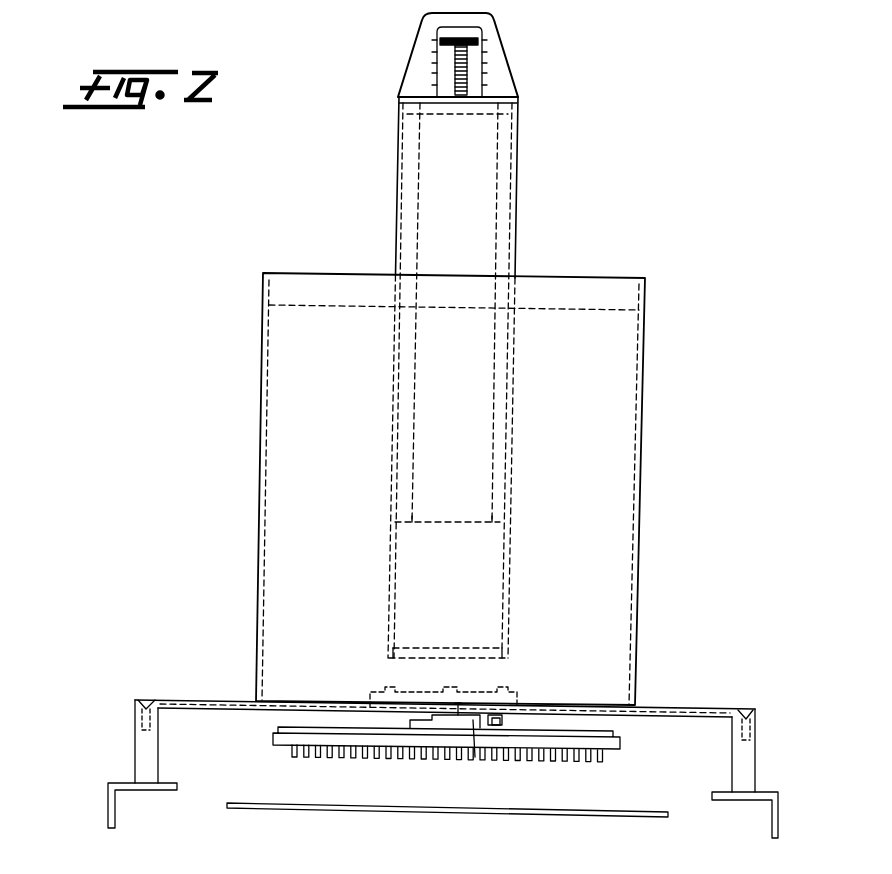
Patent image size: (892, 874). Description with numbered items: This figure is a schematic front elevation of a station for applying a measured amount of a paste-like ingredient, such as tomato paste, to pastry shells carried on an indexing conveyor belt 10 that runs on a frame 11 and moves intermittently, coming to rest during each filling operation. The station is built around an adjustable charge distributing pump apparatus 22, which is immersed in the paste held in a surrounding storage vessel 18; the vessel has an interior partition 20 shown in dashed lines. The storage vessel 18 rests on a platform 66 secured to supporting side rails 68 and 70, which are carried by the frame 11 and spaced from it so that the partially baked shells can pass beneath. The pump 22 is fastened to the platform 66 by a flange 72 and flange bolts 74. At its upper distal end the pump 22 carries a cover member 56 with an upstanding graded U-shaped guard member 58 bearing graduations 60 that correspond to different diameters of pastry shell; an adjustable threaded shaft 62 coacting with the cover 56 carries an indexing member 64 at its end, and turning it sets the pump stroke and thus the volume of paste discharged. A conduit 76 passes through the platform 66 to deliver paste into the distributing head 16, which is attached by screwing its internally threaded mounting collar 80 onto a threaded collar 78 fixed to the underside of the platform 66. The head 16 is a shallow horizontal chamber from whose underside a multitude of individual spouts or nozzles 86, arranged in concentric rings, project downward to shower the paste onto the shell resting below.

The indexing conveyor belt 10 is at (633, 817).
The frame 11 is at (108, 804).
The distributing head 16 is at (620, 745).
The storage vessel 18 is at (646, 372).
The housing partition 20 is at (602, 308).
The charge distributing pump apparatus 22 is at (518, 195).
The cover member 56 is at (519, 78).
The U-shaped guard member 58 is at (417, 48).
The graduations 60 is at (484, 62).
The adjustable threaded shaft 62 is at (455, 73).
The indexing member 64 is at (477, 40).
The platform 66 is at (672, 709).
The side rail 68 is at (135, 739).
The side rail 70 is at (757, 756).
The flange 72 is at (517, 698).
The flange bolts 74 is at (535, 662).
The conduit 76 is at (459, 702).
The threaded collar 78 is at (408, 717).
The mounting collar 80 is at (475, 745).
The spouts or nozzles 86 is at (297, 757).